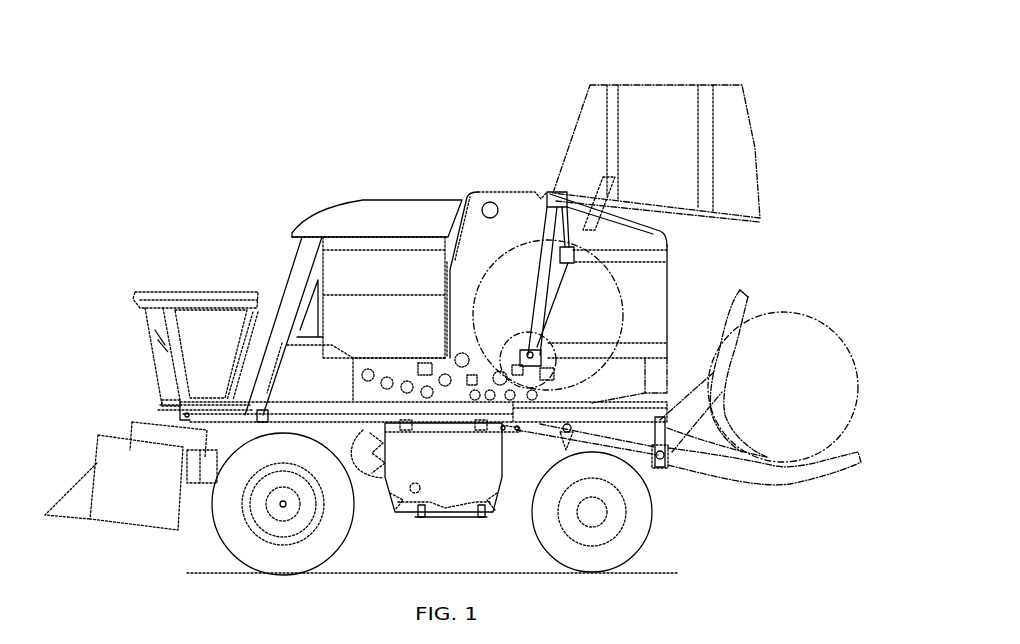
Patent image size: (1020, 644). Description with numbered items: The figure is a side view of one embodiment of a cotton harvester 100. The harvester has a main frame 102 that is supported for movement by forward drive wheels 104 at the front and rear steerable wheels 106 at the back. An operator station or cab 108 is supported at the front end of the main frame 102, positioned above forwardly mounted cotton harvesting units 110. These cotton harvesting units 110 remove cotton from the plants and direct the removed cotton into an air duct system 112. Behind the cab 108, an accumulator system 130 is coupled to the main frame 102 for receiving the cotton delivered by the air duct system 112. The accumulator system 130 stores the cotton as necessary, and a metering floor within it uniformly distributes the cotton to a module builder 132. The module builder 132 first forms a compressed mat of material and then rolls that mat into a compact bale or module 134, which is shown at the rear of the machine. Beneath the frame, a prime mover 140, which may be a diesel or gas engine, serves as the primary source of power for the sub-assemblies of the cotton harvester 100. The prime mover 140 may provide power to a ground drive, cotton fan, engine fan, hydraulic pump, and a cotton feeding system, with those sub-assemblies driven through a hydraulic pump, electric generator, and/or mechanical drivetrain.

The cotton harvester 100 is at (133, 205).
The main frame 102 is at (185, 416).
The forward drive wheels 104 is at (273, 560).
The rear steerable wheels 106 is at (637, 513).
The operator station or cab 108 is at (172, 305).
The cotton harvesting units 110 is at (86, 525).
The air duct system 112 is at (277, 292).
The accumulator system 130 is at (412, 192).
The module builder 132 is at (528, 184).
The bale or module 134 is at (826, 328).
The prime mover 140 is at (441, 497).